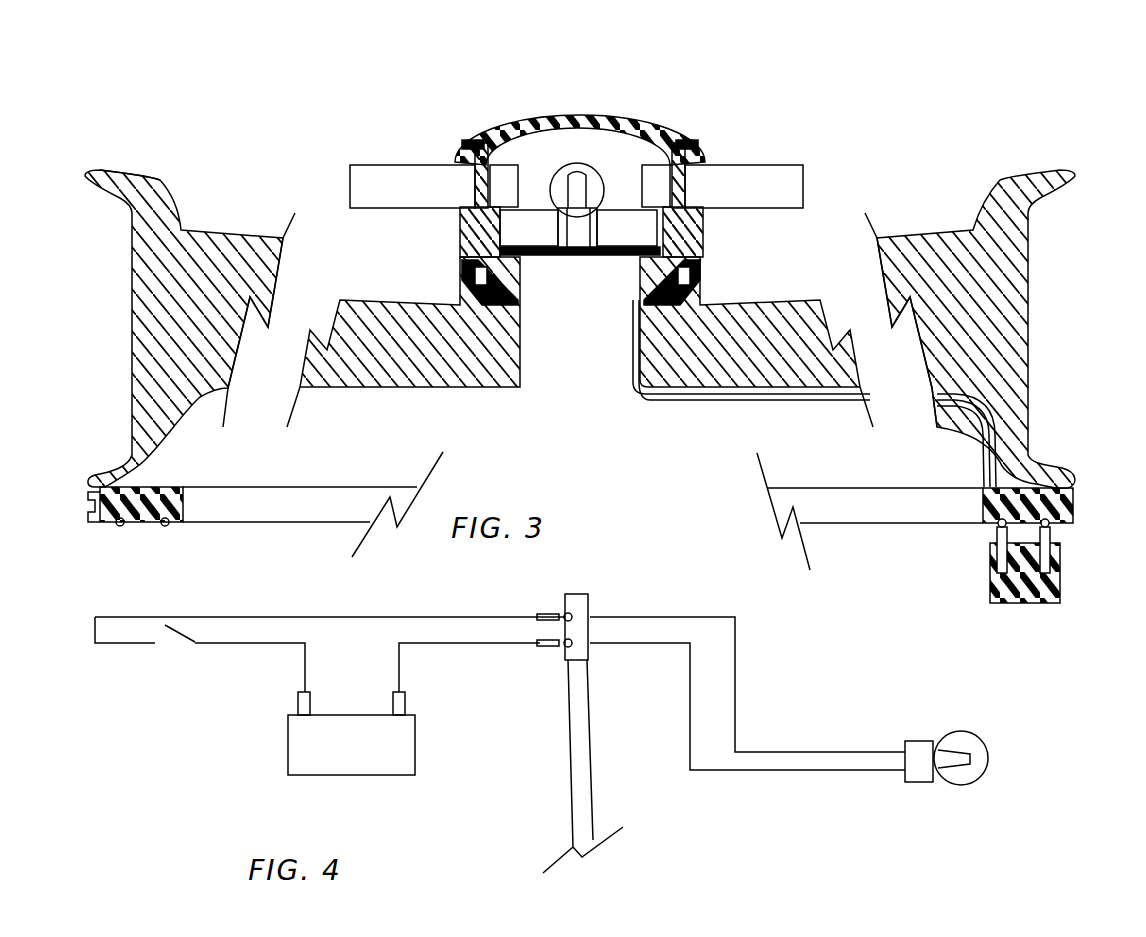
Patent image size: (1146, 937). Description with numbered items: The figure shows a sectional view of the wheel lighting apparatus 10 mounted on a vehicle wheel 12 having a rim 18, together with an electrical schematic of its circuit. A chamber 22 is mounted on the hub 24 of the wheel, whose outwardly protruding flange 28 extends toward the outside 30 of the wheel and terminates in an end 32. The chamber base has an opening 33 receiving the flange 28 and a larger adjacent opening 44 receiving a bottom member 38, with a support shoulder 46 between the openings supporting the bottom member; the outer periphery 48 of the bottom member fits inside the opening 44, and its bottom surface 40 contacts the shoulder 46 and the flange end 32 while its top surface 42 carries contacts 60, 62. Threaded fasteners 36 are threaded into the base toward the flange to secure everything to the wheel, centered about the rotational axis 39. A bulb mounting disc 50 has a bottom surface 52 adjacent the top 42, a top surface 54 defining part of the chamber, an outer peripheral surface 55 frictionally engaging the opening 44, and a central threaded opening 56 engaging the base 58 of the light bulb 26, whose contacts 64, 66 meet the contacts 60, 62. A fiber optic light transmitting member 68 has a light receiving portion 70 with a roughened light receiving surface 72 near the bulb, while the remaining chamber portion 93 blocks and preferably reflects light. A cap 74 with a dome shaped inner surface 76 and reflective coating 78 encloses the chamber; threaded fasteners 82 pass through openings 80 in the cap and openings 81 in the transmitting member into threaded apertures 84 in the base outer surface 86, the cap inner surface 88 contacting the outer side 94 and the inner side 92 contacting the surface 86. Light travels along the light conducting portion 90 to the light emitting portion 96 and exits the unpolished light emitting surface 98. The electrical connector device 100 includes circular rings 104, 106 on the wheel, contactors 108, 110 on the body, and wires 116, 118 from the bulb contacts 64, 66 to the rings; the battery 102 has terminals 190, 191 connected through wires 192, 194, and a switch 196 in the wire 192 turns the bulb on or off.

In FIG. 3, the wheel lighting apparatus 10 is at (872, 96).
In FIG. 3, the vehicle wheel 12 is at (148, 162).
In FIG. 3, the rim 18 is at (162, 192).
In FIG. 3, the chamber 22 is at (537, 140).
In FIG. 3, the hub 24 is at (638, 398).
In FIG. 3, the light bulb 26 is at (600, 150).
In FIG. 4, the light bulb 26 is at (930, 740).
In FIG. 3, the flange 28 is at (523, 360).
In FIG. 3, the outside of the wheel 30 is at (250, 232).
In FIG. 3, the end of the flange 32 is at (632, 360).
In FIG. 3, the opening 33 is at (520, 322).
In FIG. 3, the threaded fasteners 36 is at (475, 293).
In FIG. 3, the bottom member 38 is at (632, 322).
In FIG. 3, the rotational axis 39 is at (585, 255).
In FIG. 3, the bottom surface 40 is at (628, 265).
In FIG. 3, the top surface 42 is at (515, 262).
In FIG. 3, the opening 44 is at (700, 268).
In FIG. 3, the support shoulder 46 is at (470, 268).
In FIG. 3, the outer periphery 48 is at (470, 258).
In FIG. 3, the bulb mounting disc 50 is at (672, 240).
In FIG. 3, the bottom surface 52 is at (500, 243).
In FIG. 3, the top surface 54 is at (645, 165).
In FIG. 3, the outer peripheral surface 55 is at (700, 260).
In FIG. 3, the threaded opening 56 is at (563, 177).
In FIG. 3, the bulb base 58 is at (620, 160).
In FIG. 3, the contact 60 is at (545, 250).
In FIG. 3, the contact 62 is at (605, 250).
In FIG. 3, the bulb contact 64 is at (503, 213).
In FIG. 4, the bulb contact 64 is at (905, 748).
In FIG. 3, the bulb contact 66 is at (700, 220).
In FIG. 4, the bulb contact 66 is at (905, 777).
In FIG. 3, the light transmitting member 68 is at (703, 190).
In FIG. 3, the light receiving portion 70 is at (702, 178).
In FIG. 3, the light receiving surface 72 is at (697, 150).
In FIG. 3, the cap 74 is at (517, 150).
In FIG. 3, the dome shaped inner surface 76 is at (592, 185).
In FIG. 3, the reflective coating 78 is at (557, 150).
In FIG. 3, the openings 80 is at (478, 178).
In FIG. 3, the openings 81 is at (440, 170).
In FIG. 3, the threaded fasteners 82 is at (470, 131).
In FIG. 3, the threaded apertures 84 is at (585, 232).
In FIG. 3, the outer surface 86 is at (475, 215).
In FIG. 3, the inner surface 88 is at (702, 172).
In FIG. 3, the light conducting portion 90 is at (360, 172).
In FIG. 3, the inner side 92 is at (797, 212).
In FIG. 3, the chamber portion 93 is at (510, 140).
In FIG. 3, the outer side 94 is at (703, 184).
In FIG. 3, the light emitting portion 96 is at (806, 180).
In FIG. 3, the light emitting surface 98 is at (350, 190).
In FIG. 3, the electrical connector device 100 is at (890, 562).
In FIG. 4, the electrical connector device 100 is at (790, 708).
In FIG. 4, the battery 102 is at (310, 752).
In FIG. 3, the circular ring 104 is at (1045, 518).
In FIG. 4, the circular ring 104 is at (588, 617).
In FIG. 3, the circular ring 106 is at (997, 518).
In FIG. 4, the circular ring 106 is at (565, 645).
In FIG. 4, the contactor 108 is at (545, 615).
In FIG. 3, the contactor 110 is at (995, 557).
In FIG. 4, the contactor 110 is at (545, 645).
In FIG. 3, the wire 116 is at (733, 400).
In FIG. 4, the wire 116 is at (650, 643).
In FIG. 3, the wire 118 is at (800, 400).
In FIG. 4, the wire 118 is at (735, 617).
In FIG. 4, the terminal 190 is at (405, 700).
In FIG. 4, the terminal 191 is at (295, 700).
In FIG. 4, the wire 192 is at (232, 617).
In FIG. 4, the wire 194 is at (447, 643).
In FIG. 4, the switch 196 is at (182, 632).